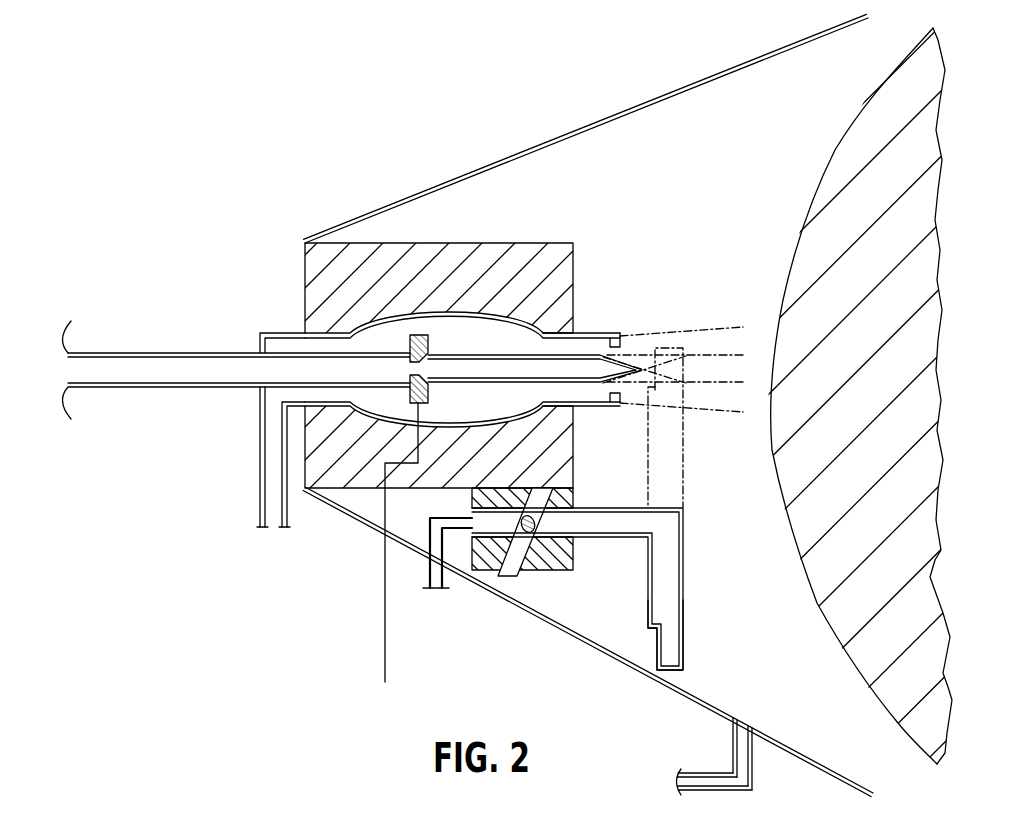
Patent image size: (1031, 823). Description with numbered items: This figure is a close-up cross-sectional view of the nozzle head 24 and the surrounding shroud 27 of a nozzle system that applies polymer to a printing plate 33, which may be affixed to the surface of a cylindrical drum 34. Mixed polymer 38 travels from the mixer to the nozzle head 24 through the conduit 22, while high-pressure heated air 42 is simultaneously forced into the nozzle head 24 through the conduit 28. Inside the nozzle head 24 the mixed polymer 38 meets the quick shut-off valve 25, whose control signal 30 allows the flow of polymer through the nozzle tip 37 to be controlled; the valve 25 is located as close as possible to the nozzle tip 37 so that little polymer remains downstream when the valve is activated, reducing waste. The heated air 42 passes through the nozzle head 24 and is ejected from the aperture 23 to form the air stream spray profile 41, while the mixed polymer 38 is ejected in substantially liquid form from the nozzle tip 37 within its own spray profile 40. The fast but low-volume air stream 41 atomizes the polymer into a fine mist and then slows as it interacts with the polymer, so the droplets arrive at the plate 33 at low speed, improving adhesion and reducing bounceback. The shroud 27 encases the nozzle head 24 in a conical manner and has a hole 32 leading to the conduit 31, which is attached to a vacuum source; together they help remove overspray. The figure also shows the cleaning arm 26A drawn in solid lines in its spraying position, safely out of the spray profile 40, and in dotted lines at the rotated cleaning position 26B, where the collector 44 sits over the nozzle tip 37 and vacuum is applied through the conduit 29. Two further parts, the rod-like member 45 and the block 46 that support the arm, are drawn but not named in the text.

The conduit 22 is at (120, 388).
The aperture 23 is at (574, 333).
The nozzle head 24 is at (490, 243).
The quick shut-off valve 25 is at (418, 335).
The cleaning arm 26A is at (685, 652).
The cleaning position of cleaning arm 26B is at (684, 483).
The shroud 27 is at (483, 171).
The conduit 28 is at (258, 466).
The conduit 29 is at (445, 589).
The control signal 30 is at (385, 650).
The conduit 31 is at (735, 750).
The hole 32 is at (748, 708).
The printing plate 33 is at (785, 521).
The cylindrical drum 34 is at (930, 478).
The nozzle tip 37 is at (608, 338).
The mixed polymer 38 is at (142, 362).
The spray profile 40 is at (690, 370).
The spray profile 41 is at (664, 332).
The heated air 42 is at (273, 527).
The collector 44 is at (655, 658).
The connecting rod 45 is at (575, 524).
The holder block 46 is at (515, 566).